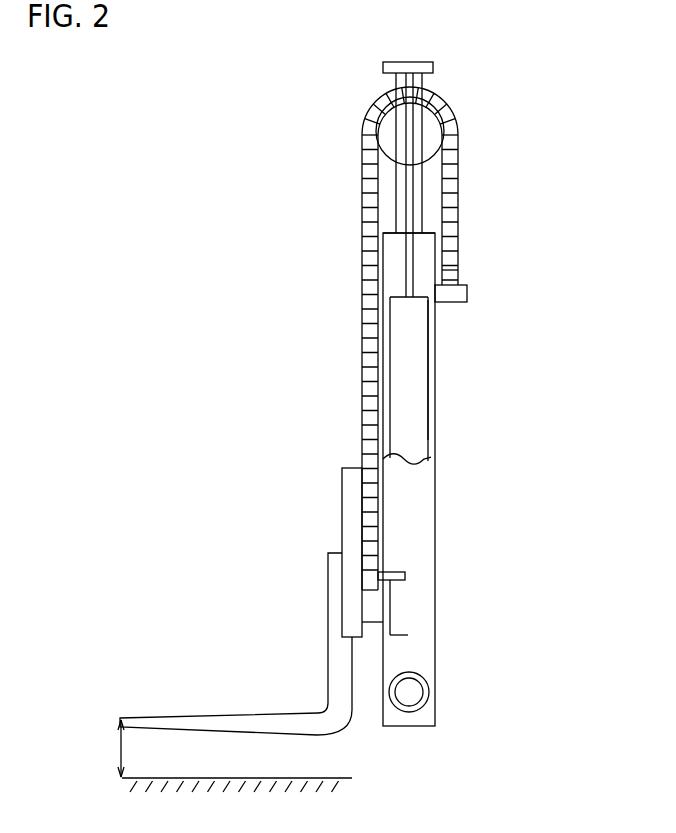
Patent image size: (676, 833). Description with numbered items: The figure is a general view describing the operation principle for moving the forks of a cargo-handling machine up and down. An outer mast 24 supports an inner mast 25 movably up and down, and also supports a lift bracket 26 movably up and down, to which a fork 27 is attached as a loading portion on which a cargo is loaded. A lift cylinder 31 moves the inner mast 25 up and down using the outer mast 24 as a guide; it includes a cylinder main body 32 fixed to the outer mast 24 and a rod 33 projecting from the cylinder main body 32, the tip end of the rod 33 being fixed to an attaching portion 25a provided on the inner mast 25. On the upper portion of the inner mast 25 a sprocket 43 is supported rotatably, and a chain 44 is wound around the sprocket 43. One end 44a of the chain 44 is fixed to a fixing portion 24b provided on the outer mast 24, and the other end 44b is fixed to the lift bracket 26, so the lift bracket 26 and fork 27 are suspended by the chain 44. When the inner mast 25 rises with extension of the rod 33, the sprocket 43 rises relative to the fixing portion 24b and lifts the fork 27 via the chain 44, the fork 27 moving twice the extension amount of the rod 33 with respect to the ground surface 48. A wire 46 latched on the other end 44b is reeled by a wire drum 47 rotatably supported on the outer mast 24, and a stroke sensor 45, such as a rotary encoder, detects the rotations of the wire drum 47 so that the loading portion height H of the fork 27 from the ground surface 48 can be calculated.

The outer mast 24 is at (420, 606).
The fixing portion 24b is at (452, 302).
The inner mast 25 is at (424, 76).
The attaching portion 25a is at (413, 62).
The lift bracket 26 is at (352, 486).
The fork 27 is at (215, 718).
The lift cylinder 31 is at (429, 349).
The cylinder main body 32 is at (428, 418).
The rod 33 is at (413, 245).
The sprocket 43 is at (387, 122).
The chain 44 is at (361, 193).
The one end of the chain 44a is at (458, 270).
The other end of the chain 44b is at (370, 532).
The stroke sensor 45 is at (403, 707).
The wire 46 is at (408, 635).
The wire drum 47 is at (429, 690).
The ground surface 48 is at (248, 777).
The loading portion height H is at (118, 752).